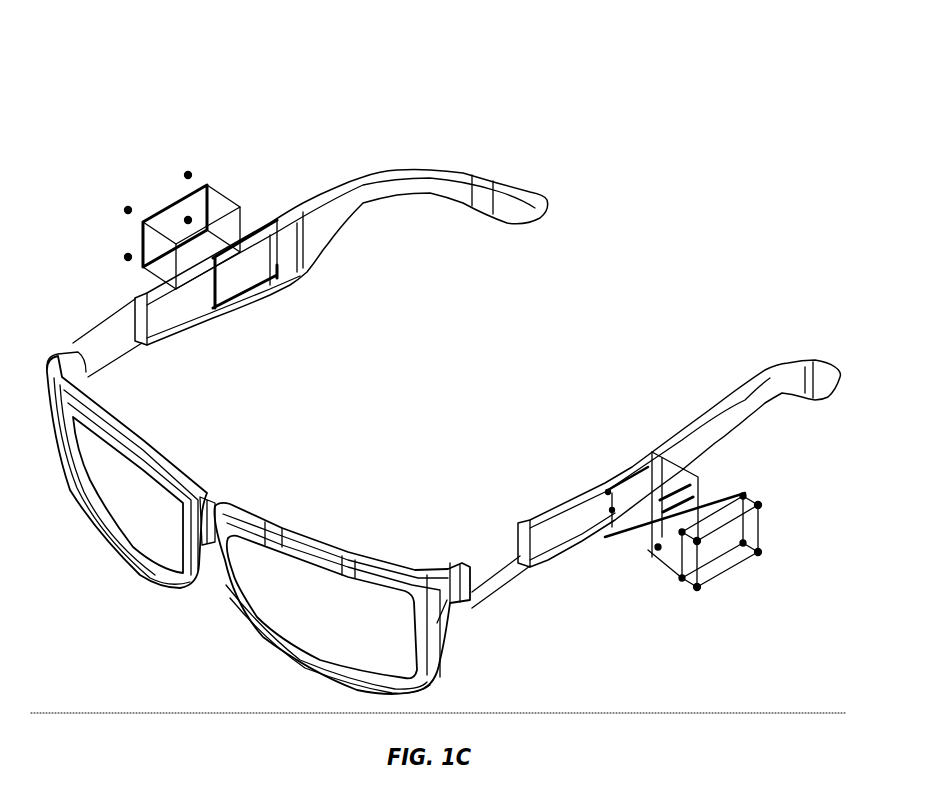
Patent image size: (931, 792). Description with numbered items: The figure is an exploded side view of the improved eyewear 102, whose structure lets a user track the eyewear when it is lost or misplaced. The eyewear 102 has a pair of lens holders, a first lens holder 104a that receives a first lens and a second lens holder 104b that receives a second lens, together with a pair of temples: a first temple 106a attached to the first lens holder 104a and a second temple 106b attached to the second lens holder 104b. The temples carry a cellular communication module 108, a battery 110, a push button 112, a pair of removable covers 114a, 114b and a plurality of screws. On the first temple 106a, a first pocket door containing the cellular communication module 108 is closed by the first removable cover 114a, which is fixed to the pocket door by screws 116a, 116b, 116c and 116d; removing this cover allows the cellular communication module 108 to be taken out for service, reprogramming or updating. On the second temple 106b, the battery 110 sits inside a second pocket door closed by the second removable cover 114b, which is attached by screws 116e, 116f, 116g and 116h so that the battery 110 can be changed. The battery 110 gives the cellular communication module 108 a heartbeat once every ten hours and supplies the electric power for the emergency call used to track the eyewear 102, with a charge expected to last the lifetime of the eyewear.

The eyewear 102 is at (203, 88).
The first lens holder 104a is at (305, 543).
The second lens holder 104b is at (148, 458).
The first temple 106a is at (735, 406).
The second temple 106b is at (416, 172).
The cellular communication module 108 is at (688, 484).
The battery 110 is at (187, 259).
The push button 112 is at (605, 505).
The first removable cover 114a is at (722, 545).
The second removable cover 114b is at (180, 195).
The screw 116a is at (757, 503).
The screw 116b is at (694, 543).
The screw 116c is at (696, 590).
The screw 116d is at (757, 550).
The screw 116e is at (190, 173).
The screw 116f is at (127, 208).
The screw 116g is at (127, 255).
The screw 116h is at (190, 218).